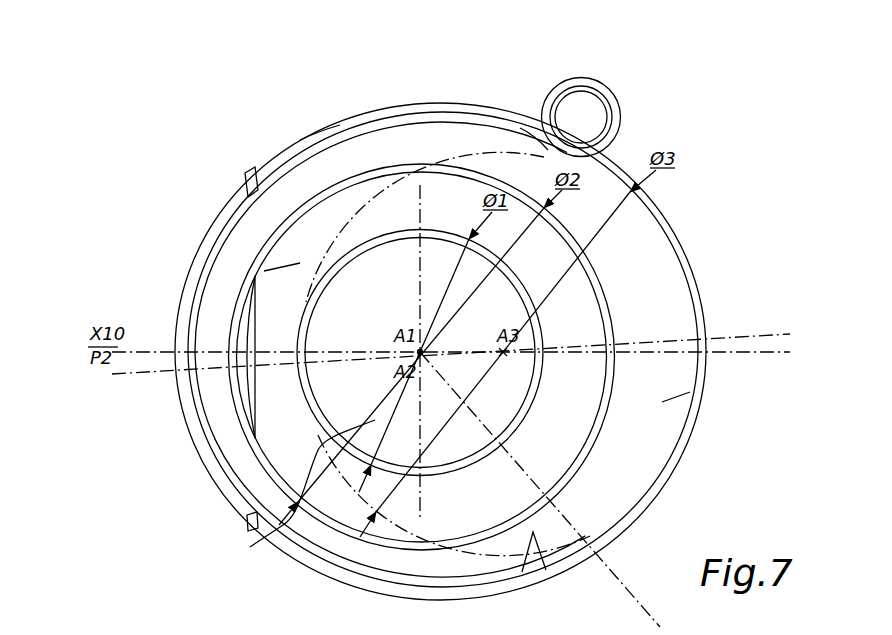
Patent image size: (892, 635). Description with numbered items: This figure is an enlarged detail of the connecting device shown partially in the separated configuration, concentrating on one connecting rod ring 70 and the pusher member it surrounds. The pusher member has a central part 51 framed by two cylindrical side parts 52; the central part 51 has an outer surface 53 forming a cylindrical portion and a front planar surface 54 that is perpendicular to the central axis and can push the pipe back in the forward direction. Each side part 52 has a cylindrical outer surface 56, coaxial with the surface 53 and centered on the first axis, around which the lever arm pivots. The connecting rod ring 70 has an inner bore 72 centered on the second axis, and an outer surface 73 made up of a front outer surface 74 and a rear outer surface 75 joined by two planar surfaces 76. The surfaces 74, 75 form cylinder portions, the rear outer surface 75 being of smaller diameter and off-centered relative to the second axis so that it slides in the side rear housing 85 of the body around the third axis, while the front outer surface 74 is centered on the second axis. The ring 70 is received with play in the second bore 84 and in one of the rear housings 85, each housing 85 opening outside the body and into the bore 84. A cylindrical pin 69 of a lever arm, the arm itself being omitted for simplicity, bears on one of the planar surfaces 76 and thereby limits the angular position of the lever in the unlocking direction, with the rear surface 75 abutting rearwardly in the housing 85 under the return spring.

The central part 51 is at (522, 280).
The cylindrical side part 52 is at (597, 281).
The outer surface 53 is at (707, 312).
The front planar surface 54 is at (245, 391).
The cylindrical outer surface 56 is at (250, 547).
The cylindrical pin 69 is at (620, 118).
The connecting rod ring 70 is at (243, 228).
The inner bore 72 is at (268, 271).
The outer surface 73 is at (391, 110).
The front outer surface 74 is at (317, 135).
The rear outer surface 75 is at (699, 261).
The planar surface 76 is at (545, 137).
The second bore 84 is at (523, 570).
The side rear housing 85 is at (688, 393).